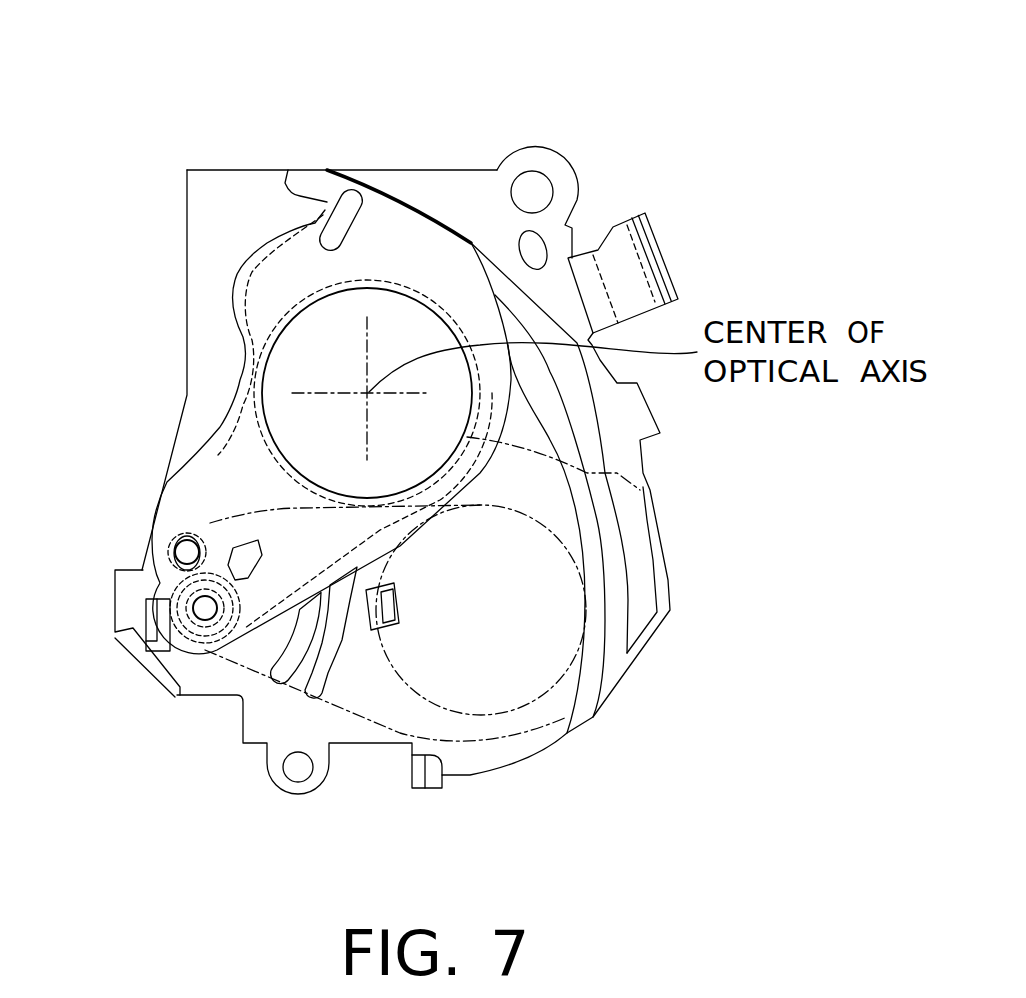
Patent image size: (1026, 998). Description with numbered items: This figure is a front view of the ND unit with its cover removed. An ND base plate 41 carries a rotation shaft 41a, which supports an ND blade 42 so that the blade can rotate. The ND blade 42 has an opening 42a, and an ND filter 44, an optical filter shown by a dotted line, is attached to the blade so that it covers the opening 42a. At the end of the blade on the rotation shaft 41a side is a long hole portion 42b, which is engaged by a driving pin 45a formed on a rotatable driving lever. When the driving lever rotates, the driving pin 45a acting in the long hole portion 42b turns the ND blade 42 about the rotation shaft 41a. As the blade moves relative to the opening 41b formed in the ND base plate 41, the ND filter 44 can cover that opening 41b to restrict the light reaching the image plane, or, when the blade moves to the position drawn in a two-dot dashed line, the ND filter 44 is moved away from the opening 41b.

The ND base plate 41 is at (243, 183).
The rotation shaft 41a is at (205, 615).
The opening 41b is at (448, 223).
The ND blade 42 is at (437, 305).
The opening 42a is at (307, 313).
The long hole portion 42b is at (192, 566).
The ND filter 44 is at (358, 187).
The driving pin 45a is at (143, 562).